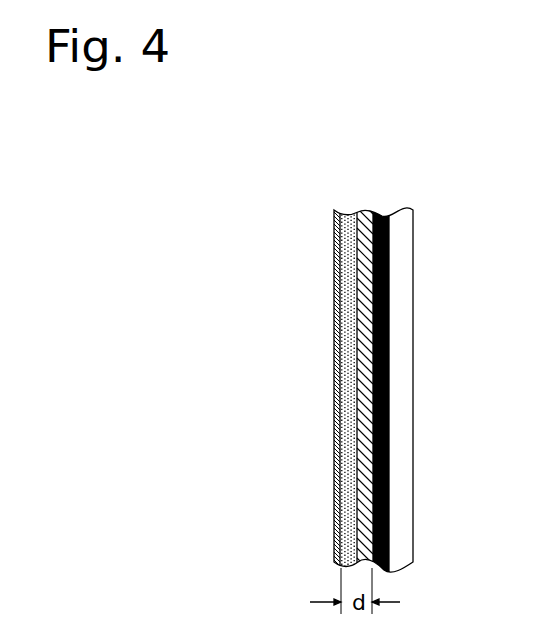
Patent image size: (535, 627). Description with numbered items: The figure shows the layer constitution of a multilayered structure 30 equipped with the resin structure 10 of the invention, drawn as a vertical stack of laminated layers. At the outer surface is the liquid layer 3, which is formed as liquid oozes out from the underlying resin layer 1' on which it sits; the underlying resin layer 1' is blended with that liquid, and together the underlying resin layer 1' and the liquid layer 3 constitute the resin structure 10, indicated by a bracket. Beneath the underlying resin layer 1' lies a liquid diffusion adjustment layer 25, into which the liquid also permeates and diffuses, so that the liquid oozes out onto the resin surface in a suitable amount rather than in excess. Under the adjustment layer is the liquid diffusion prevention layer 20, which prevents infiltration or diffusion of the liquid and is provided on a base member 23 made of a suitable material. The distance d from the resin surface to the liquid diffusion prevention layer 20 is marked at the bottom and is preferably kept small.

The structure 30 is at (364, 364).
The resin structure 10 is at (294, 389).
The liquid layer 3 is at (338, 277).
The underlying resin layer 1' is at (319, 387).
The liquid diffusion adjustment layer 25 is at (365, 212).
The liquid diffusion prevention layer 20 is at (381, 314).
The base member 23 is at (410, 277).